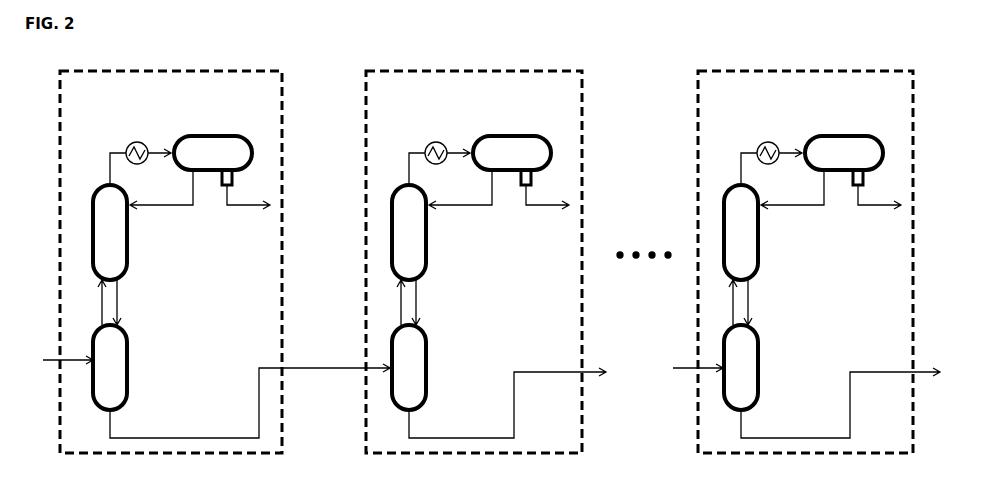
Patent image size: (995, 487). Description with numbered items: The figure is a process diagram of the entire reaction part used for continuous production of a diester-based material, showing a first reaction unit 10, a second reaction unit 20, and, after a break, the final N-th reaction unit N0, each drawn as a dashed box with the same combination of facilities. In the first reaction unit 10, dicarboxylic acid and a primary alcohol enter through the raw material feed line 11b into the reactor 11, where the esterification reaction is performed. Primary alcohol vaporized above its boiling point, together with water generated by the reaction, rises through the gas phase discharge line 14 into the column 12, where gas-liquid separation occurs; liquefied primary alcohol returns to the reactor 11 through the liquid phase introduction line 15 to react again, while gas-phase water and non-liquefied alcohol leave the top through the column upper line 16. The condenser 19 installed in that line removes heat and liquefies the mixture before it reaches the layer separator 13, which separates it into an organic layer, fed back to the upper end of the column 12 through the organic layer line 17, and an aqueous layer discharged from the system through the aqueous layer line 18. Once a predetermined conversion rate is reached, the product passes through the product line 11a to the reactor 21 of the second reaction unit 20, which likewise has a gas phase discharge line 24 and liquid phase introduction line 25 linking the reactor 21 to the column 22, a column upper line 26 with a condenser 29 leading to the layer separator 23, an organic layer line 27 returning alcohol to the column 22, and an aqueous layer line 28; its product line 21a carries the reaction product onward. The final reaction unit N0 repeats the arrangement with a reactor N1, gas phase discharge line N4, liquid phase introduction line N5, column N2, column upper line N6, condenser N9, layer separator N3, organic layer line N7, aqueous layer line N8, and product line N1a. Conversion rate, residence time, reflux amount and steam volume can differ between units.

The reaction unit 10 is at (93, 66).
The reactor 11 is at (93, 396).
The product line 11a is at (250, 401).
The raw material feed line 11b is at (68, 352).
The column 12 is at (93, 222).
The layer separator 13 is at (210, 136).
The gas phase discharge line 14 is at (90, 302).
The liquid phase introduction line 15 is at (127, 302).
The column upper line 16 is at (108, 169).
The organic layer line 17 is at (161, 189).
The aqueous layer line 18 is at (246, 199).
The condenser 19 is at (135, 143).
The reaction unit 20 is at (389, 66).
The reactor 21 is at (374, 367).
The product line 21a is at (507, 403).
The column 22 is at (374, 232).
The layer separator 23 is at (499, 125).
The gas phase discharge line 24 is at (389, 302).
The liquid phase introduction line 25 is at (425, 302).
The column upper line 26 is at (407, 169).
The organic layer line 27 is at (460, 189).
The aqueous layer line 28 is at (545, 200).
The condenser 29 is at (436, 142).
The reaction unit N0 is at (726, 66).
The reactor N1 is at (704, 367).
The product line N1a is at (840, 403).
The column N2 is at (704, 232).
The layer separator N3 is at (831, 125).
The gas phase discharge line N4 is at (720, 302).
The liquid phase introduction line N5 is at (758, 302).
The column upper line N6 is at (736, 169).
The organic layer line N7 is at (792, 189).
The aqueous layer line N8 is at (877, 200).
The condenser N9 is at (767, 142).